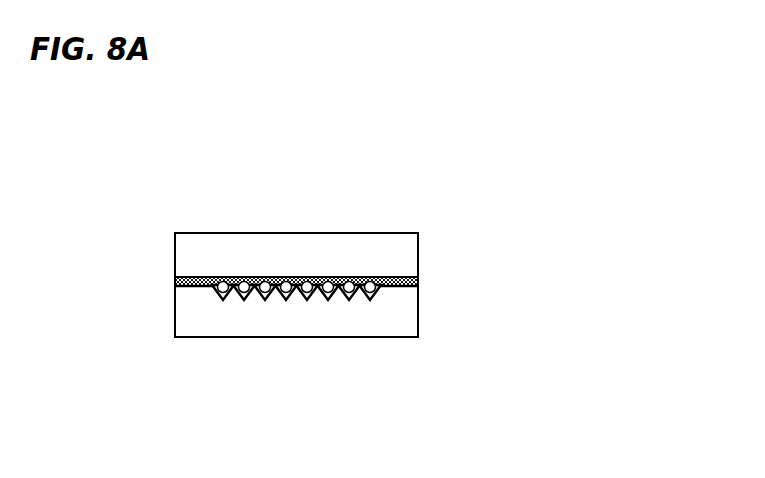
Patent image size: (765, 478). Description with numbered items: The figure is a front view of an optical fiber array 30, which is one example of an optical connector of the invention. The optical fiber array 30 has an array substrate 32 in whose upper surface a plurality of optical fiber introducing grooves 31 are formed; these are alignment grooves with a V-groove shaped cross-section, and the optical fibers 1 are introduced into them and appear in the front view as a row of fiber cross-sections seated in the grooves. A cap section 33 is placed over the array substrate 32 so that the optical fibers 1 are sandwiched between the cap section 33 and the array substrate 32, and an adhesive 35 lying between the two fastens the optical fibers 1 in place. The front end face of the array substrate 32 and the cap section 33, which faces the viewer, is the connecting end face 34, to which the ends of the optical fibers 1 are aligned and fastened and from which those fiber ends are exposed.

The optical fiber array 30 is at (402, 214).
The cap section 33 is at (207, 248).
The array substrate 32 is at (182, 318).
The adhesive 35 is at (175, 281).
The optical fiber 1 is at (265, 301).
The optical fiber introducing groove 31 is at (370, 281).
The connecting end face 34 is at (387, 322).